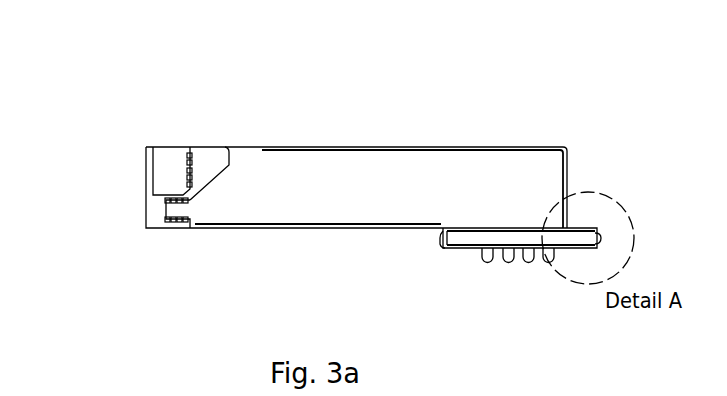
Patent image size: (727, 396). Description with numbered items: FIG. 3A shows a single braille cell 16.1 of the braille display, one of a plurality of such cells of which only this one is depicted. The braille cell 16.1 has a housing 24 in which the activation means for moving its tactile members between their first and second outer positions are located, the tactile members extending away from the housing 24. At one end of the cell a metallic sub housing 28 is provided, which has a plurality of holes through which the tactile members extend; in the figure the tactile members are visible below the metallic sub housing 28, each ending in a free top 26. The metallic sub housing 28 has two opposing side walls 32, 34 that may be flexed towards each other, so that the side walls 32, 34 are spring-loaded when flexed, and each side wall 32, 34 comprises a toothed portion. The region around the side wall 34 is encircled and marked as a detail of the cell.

The braille cell 16.1 is at (290, 165).
The housing 24 is at (508, 165).
The metallic sub housing 28 is at (580, 239).
The side wall 32 is at (440, 241).
The side wall 34 is at (599, 242).
The free top 26 is at (508, 263).